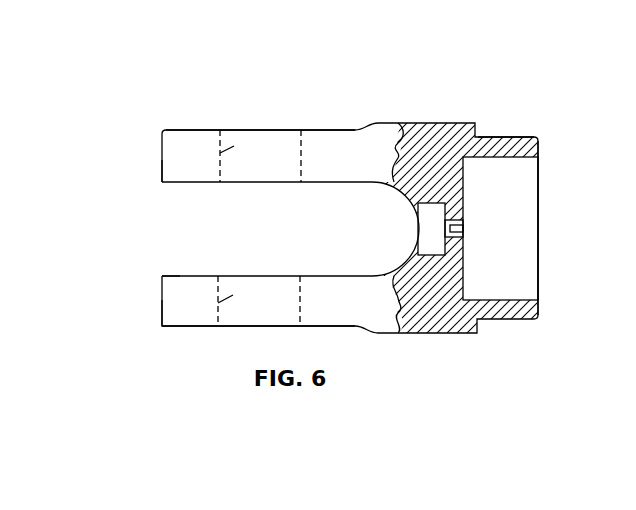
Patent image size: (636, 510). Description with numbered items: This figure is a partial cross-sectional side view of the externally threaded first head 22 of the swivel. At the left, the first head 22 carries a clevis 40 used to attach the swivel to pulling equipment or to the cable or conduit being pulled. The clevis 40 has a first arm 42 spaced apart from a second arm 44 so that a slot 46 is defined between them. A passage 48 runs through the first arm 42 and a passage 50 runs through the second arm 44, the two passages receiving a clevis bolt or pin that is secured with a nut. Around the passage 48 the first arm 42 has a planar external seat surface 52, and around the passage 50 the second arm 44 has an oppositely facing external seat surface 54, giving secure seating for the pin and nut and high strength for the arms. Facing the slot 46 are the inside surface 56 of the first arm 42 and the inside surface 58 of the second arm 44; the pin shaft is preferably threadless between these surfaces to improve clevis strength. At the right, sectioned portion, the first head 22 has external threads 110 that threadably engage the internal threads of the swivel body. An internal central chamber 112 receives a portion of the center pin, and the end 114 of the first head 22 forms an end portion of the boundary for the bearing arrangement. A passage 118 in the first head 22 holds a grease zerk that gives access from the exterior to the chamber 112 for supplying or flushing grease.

The first head 22 is at (352, 100).
The clevis 40 is at (161, 297).
The first arm 42 is at (162, 157).
The second arm 44 is at (161, 318).
The slot 46 is at (195, 233).
The passage 48 is at (243, 143).
The passage 50 is at (242, 287).
The external seat surface 52 is at (180, 129).
The external seat surface 54 is at (178, 327).
The inside surface 56 is at (162, 183).
The inside surface 58 is at (178, 275).
The external threads 110 is at (502, 135).
The internal central chamber 112 is at (510, 218).
The end 114 is at (540, 150).
The passage 118 is at (455, 232).